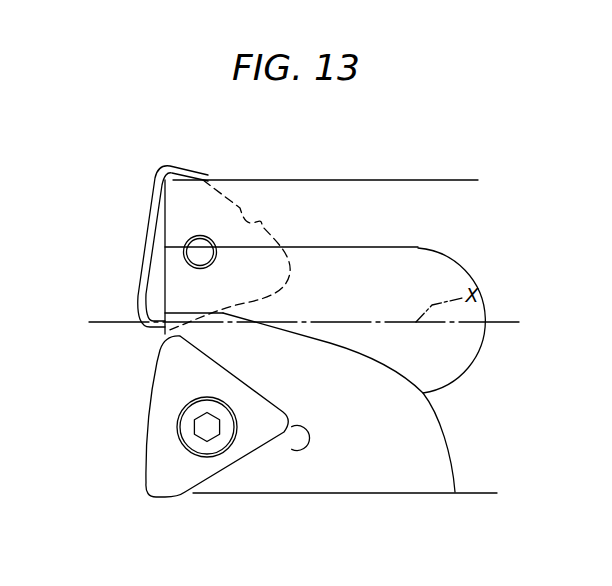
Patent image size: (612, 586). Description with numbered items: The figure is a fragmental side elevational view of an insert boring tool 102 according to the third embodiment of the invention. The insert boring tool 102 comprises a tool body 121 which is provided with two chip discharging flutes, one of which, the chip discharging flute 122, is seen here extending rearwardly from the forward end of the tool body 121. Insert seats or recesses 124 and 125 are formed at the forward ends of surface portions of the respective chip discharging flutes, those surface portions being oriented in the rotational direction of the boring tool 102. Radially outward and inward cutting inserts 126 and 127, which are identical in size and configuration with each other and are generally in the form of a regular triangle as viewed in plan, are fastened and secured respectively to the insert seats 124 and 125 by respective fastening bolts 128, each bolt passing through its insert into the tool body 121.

The insert boring tool 102 is at (457, 175).
The tool body 121 is at (363, 180).
The chip discharging flute 122 is at (392, 480).
The insert seat 124 is at (250, 468).
The insert seat 125 is at (260, 222).
The radially outward cutting insert 126 is at (142, 482).
The radially inward cutting insert 127 is at (158, 176).
The fastening bolt 128 is at (205, 236).